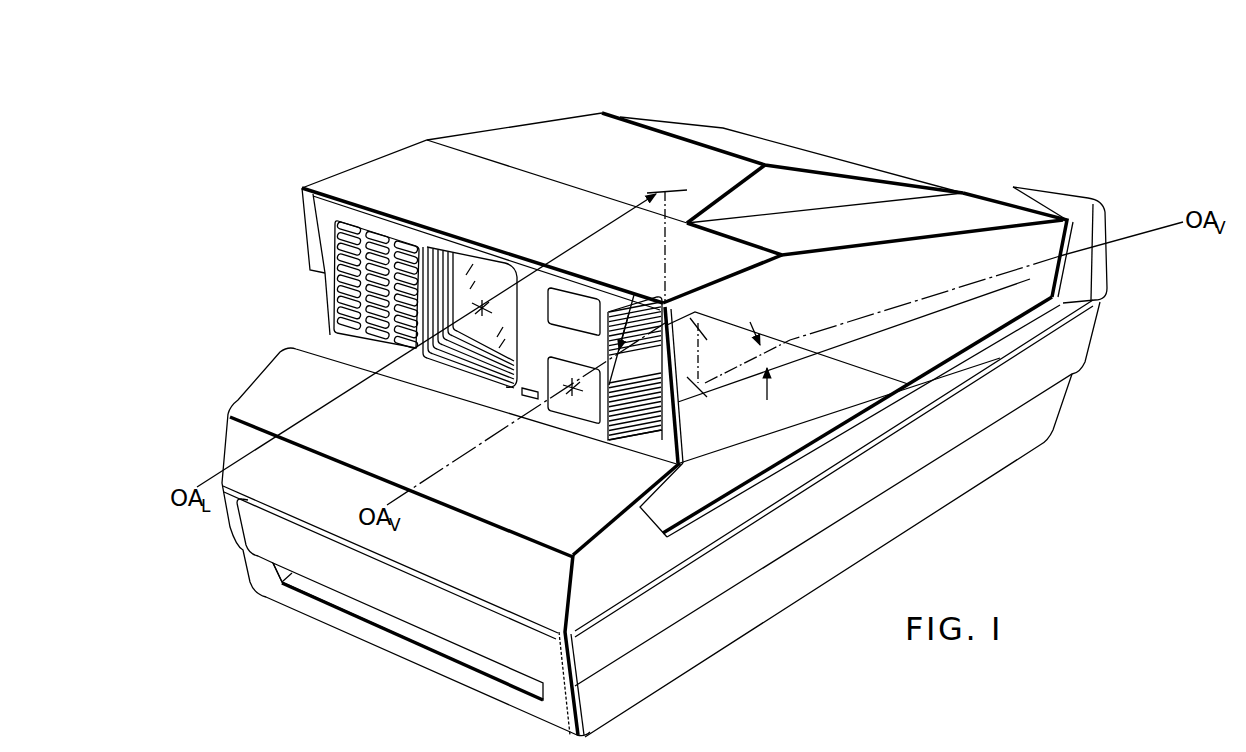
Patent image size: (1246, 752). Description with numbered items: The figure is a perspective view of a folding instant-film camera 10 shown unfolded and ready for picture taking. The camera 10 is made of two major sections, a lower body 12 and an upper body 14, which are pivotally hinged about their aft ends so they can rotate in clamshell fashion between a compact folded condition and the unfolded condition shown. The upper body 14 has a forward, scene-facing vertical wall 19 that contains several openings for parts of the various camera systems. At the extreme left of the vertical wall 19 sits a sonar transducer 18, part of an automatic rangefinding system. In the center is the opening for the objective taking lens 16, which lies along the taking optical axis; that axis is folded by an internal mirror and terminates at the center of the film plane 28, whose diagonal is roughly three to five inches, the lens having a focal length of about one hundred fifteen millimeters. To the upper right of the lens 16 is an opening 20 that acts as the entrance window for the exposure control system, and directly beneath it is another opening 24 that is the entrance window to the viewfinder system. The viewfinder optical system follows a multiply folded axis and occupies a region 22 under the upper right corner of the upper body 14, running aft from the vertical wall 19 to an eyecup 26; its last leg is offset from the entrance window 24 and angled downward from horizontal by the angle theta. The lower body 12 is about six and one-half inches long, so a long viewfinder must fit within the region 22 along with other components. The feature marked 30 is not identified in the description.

The camera 10 is at (908, 98).
The lower body 12 is at (1010, 466).
The upper body 14 is at (600, 108).
The objective taking lens 16 is at (492, 319).
The sonar transducer 18 is at (359, 226).
The vertical wall 19 is at (535, 297).
The opening 20 is at (560, 318).
The region 22 is at (958, 216).
The opening 24 is at (568, 396).
The eyecup 26 is at (1110, 218).
The film plane 28 is at (717, 527).
The cover flap 30 is at (812, 158).